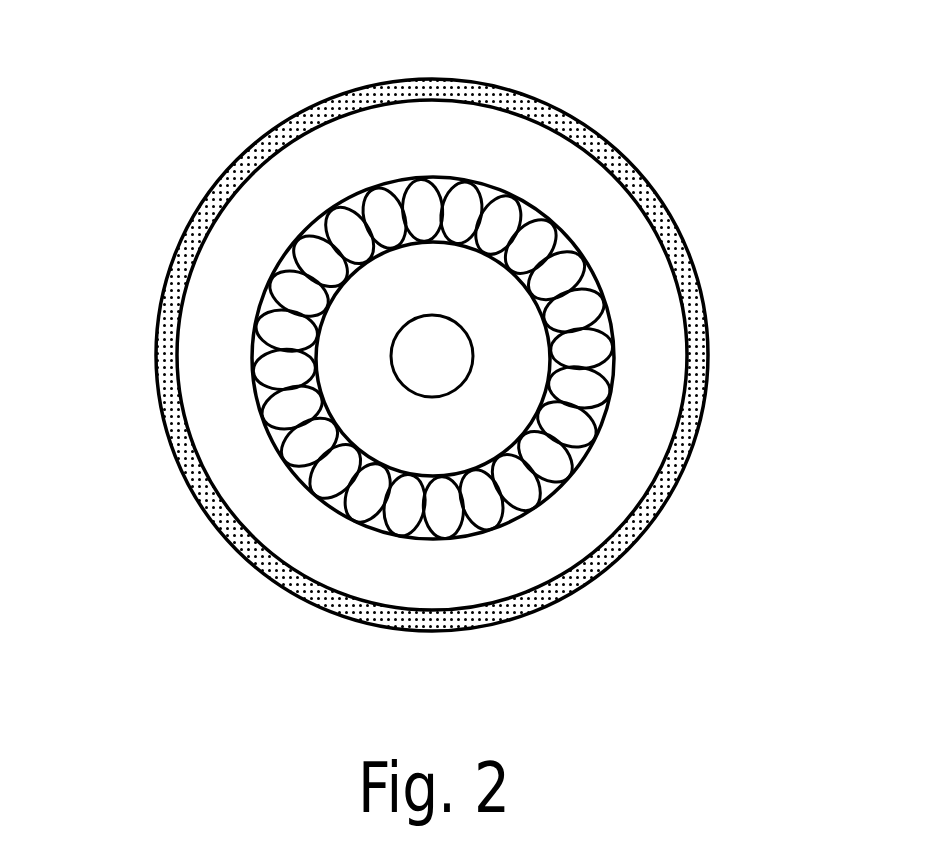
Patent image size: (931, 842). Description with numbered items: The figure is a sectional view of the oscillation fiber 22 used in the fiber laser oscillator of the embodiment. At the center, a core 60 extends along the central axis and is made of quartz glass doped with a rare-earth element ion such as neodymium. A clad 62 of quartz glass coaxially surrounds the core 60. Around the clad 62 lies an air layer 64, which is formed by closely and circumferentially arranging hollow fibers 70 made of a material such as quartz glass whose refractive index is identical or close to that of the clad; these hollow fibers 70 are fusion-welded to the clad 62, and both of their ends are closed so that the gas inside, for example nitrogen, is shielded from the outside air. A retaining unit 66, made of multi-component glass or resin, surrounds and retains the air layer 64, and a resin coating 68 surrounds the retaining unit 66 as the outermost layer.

The oscillation fiber 22 is at (219, 88).
The core 60 is at (430, 358).
The clad 62 is at (340, 382).
The air layer 64 is at (362, 493).
The retaining unit 66 is at (528, 560).
The coating 68 is at (706, 355).
The hollow fibers 70 is at (520, 201).